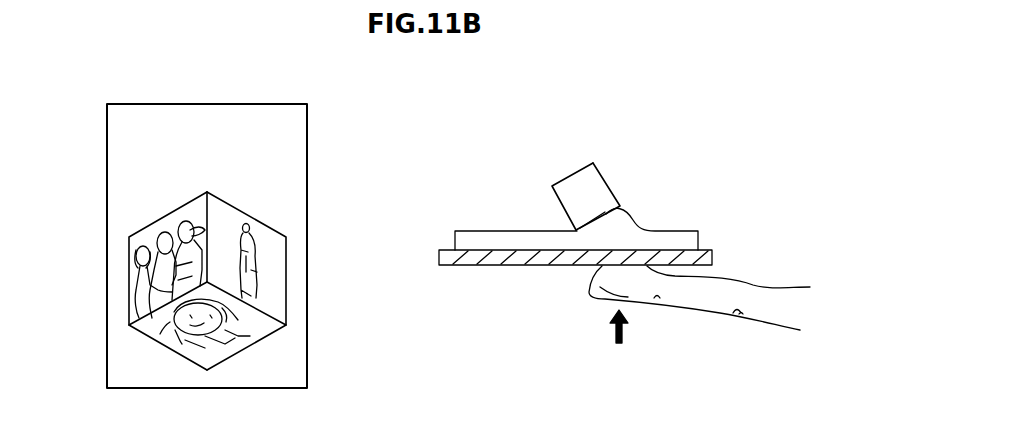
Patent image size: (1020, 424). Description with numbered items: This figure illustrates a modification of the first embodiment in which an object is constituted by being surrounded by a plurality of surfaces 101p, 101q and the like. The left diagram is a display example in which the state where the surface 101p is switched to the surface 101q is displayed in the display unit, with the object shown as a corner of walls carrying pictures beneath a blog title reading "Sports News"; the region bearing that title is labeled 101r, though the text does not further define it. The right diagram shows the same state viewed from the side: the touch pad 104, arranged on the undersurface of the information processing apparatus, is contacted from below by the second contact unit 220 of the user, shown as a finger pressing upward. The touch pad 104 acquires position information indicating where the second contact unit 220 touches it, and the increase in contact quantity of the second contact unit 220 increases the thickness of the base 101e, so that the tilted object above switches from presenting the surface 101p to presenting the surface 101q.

The surface 101p is at (138, 240).
The surface 101q is at (275, 274).
The blog title display region 101r is at (302, 159).
The base 101e is at (630, 220).
The touch pad 104 is at (508, 262).
The second contact unit 220 is at (755, 320).